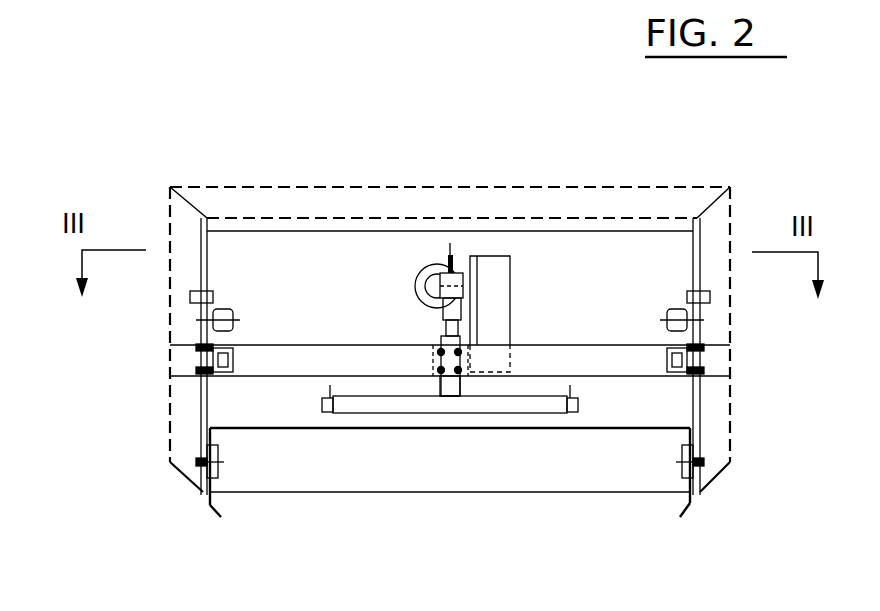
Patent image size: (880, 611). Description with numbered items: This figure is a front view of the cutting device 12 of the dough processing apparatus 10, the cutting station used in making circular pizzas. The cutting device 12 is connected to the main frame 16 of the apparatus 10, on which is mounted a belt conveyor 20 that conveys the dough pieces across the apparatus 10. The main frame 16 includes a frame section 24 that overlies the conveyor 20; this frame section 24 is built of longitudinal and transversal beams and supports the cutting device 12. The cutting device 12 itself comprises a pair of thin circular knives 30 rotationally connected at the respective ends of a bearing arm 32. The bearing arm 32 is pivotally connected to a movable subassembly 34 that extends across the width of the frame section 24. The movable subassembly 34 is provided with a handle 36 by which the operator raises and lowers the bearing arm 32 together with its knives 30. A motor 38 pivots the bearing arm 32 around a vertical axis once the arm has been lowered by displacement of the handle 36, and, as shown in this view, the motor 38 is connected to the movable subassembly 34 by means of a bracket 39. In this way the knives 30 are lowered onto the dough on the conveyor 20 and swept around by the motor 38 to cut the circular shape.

The apparatus 10 is at (108, 143).
The cutting device 12 is at (305, 292).
The main frame 16 is at (166, 404).
The belt conveyor 20 is at (672, 428).
The frame section 24 is at (577, 203).
The thin circular knives 30 is at (333, 413).
The bearing arm 32 is at (427, 410).
The movable subassembly 34 is at (620, 367).
The handle 36 is at (660, 227).
The motor 38 is at (415, 285).
The bracket 39 is at (498, 268).